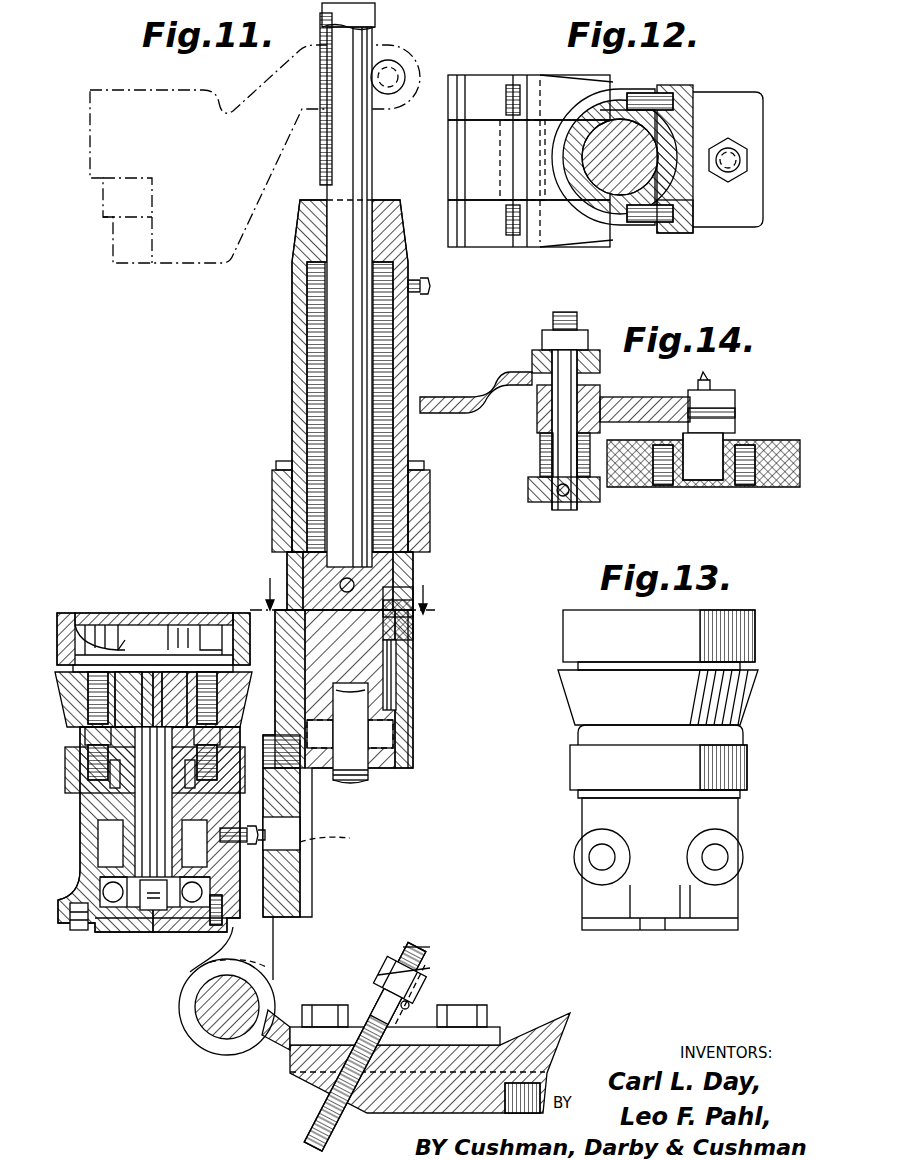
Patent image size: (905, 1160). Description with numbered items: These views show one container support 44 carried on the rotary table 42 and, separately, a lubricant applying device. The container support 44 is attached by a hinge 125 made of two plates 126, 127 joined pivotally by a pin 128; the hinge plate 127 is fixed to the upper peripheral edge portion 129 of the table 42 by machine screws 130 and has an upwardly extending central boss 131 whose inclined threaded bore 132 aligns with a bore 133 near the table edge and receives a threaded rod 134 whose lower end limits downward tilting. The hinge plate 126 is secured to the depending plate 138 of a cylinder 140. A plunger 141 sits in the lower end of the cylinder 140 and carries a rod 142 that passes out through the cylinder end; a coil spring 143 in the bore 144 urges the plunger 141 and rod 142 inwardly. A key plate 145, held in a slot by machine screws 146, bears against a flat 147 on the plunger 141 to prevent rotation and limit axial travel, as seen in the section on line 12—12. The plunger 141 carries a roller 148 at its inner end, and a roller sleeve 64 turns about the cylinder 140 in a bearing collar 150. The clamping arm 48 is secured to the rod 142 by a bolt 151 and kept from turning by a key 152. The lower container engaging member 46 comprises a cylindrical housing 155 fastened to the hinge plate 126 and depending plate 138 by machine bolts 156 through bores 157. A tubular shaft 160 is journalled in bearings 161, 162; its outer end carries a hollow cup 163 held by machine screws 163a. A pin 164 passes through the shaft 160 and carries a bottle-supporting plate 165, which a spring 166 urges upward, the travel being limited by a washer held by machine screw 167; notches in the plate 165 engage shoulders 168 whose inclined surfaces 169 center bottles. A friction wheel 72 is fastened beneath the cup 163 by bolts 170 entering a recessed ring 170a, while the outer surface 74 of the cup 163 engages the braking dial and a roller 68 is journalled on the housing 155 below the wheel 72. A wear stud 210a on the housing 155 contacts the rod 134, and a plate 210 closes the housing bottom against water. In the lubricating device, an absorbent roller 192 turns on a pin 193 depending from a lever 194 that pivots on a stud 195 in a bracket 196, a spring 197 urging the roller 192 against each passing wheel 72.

In FIG. 11, the section line 12 is at (354, 598).
In FIG. 11, the rotary table 42 is at (530, 1028).
In FIG. 11, the container support 44 is at (285, 565).
In FIG. 12, the container support 44 is at (690, 80).
In FIG. 13, the lower container engaging member 46 is at (565, 705).
In FIG. 11, the clamping arm 48 is at (128, 88).
In FIG. 11, the roller sleeve 64 is at (270, 507).
In FIG. 11, the roller 68 is at (68, 780).
In FIG. 13, the roller 68 is at (570, 770).
In FIG. 11, the wheel 72 is at (56, 710).
In FIG. 11, the outer surface of cup 74 is at (62, 648).
In FIG. 13, the outer surface of cup 74 is at (563, 638).
In FIG. 11, the hinge 125 is at (239, 1002).
In FIG. 12, the hinge 125 is at (478, 250).
In FIG. 11, the hinge plate 126 is at (255, 945).
In FIG. 12, the hinge plate 126 is at (455, 153).
In FIG. 11, the hinge plate 127 is at (430, 1027).
In FIG. 12, the hinge plate 127 is at (480, 85).
In FIG. 11, the pin 128 is at (212, 1020).
In FIG. 12, the pin 128 is at (465, 165).
In FIG. 11, the upper peripheral edge portion 129 is at (280, 1048).
In FIG. 11, the machine screws 130 is at (330, 1010).
In FIG. 11, the central boss 131 is at (380, 990).
In FIG. 11, the threaded bore 132 is at (428, 975).
In FIG. 11, the bore 133 is at (330, 1075).
In FIG. 11, the threaded rod 134 is at (420, 952).
In FIG. 11, the depending plate 138 is at (290, 895).
In FIG. 11, the cylinder 140 is at (410, 692).
In FIG. 12, the cylinder 140 is at (597, 220).
In FIG. 11, the plunger 141 is at (385, 768).
In FIG. 12, the plunger 141 is at (620, 205).
In FIG. 11, the rod 142 is at (345, 392).
In FIG. 11, the coil spring 143 is at (388, 340).
In FIG. 11, the bore 144 is at (392, 372).
In FIG. 11, the key plate 145 is at (410, 590).
In FIG. 12, the key plate 145 is at (720, 215).
In FIG. 11, the machine screws 146 is at (412, 605).
In FIG. 12, the machine screws 146 is at (668, 230).
In FIG. 11, the flat 147 is at (392, 663).
In FIG. 12, the flat 147 is at (660, 145).
In FIG. 11, the roller 148 is at (348, 780).
In FIG. 11, the bearing collar 150 is at (280, 466).
In FIG. 11, the bolt 151 is at (390, 68).
In FIG. 11, the key 152 is at (320, 138).
In FIG. 11, the cylindrical housing 155 is at (90, 838).
In FIG. 13, the cylindrical housing 155 is at (595, 815).
In FIG. 11, the machine bolts 156 is at (348, 836).
In FIG. 13, the bores 157 is at (594, 860).
In FIG. 11, the tubular shaft 160 is at (130, 850).
In FIG. 11, the bearing 161 is at (125, 907).
In FIG. 11, the bearing 162 is at (110, 775).
In FIG. 11, the hollow cup 163 is at (78, 615).
In FIG. 11, the machine screws 163a is at (233, 612).
In FIG. 11, the pin 164 is at (212, 908).
In FIG. 11, the bottle-supporting plate 165 is at (170, 625).
In FIG. 11, the spring 166 is at (118, 625).
In FIG. 11, the machine screw 167 is at (150, 910).
In FIG. 11, the shoulders 168 is at (100, 625).
In FIG. 11, the surfaces 169 is at (200, 628).
In FIG. 11, the bolts 170 is at (75, 668).
In FIG. 11, the ring 170a is at (86, 733).
In FIG. 14, the roller 192 is at (785, 475).
In FIG. 14, the pin 193 is at (705, 400).
In FIG. 14, the lever 194 is at (612, 398).
In FIG. 14, the stud 195 is at (560, 420).
In FIG. 14, the bracket 196 is at (505, 372).
In FIG. 14, the spring 197 is at (545, 460).
In FIG. 11, the plate 210 is at (80, 928).
In FIG. 11, the wear stud 210a is at (78, 930).